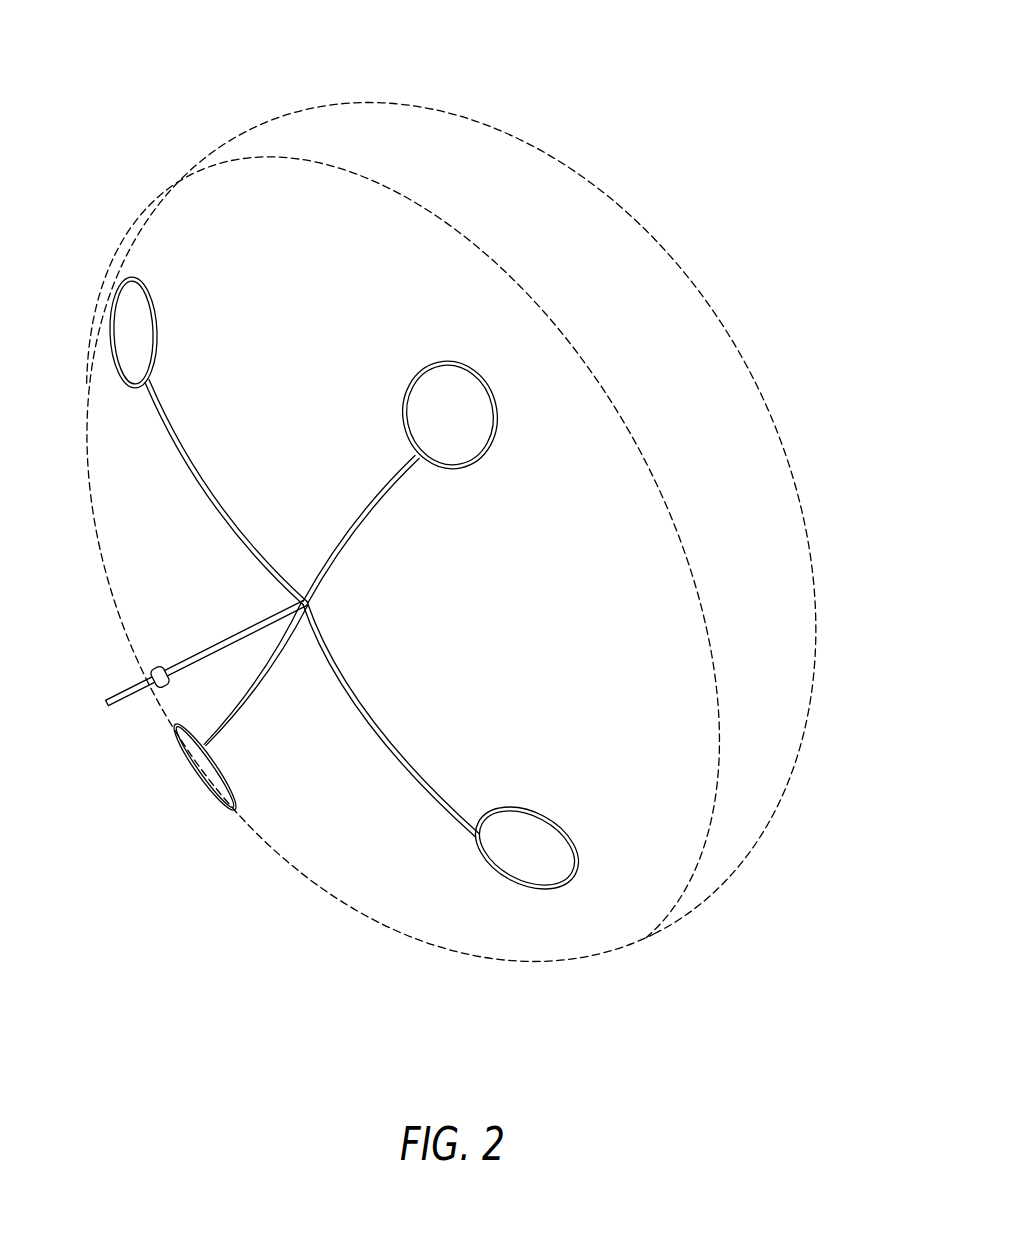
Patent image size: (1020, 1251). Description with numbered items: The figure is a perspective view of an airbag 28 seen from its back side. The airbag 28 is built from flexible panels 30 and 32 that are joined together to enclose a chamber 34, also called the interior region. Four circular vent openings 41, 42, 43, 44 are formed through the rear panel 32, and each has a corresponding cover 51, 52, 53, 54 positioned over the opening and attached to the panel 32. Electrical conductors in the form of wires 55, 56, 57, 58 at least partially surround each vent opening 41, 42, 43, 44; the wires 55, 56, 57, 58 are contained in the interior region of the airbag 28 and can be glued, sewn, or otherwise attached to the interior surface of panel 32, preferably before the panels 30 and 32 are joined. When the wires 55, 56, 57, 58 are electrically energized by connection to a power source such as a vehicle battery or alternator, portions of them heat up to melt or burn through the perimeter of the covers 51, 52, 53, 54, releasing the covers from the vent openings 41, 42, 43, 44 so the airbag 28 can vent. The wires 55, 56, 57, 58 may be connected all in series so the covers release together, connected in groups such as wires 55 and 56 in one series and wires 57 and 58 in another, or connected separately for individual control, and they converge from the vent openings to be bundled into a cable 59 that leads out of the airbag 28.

The airbag 28 is at (479, 543).
The flexible panel 30 is at (603, 188).
The rear panel 32 is at (297, 862).
The chamber 34 is at (680, 357).
The vent opening 41 is at (128, 323).
The vent opening 42 is at (437, 403).
The vent opening 43 is at (545, 862).
The vent opening 44 is at (203, 758).
The cover 51 is at (137, 332).
The cover 52 is at (467, 421).
The cover 53 is at (528, 840).
The cover 54 is at (189, 737).
The wire 55 is at (183, 443).
The wire 56 is at (368, 516).
The wire 57 is at (382, 732).
The wire 58 is at (241, 706).
The cable 59 is at (118, 686).